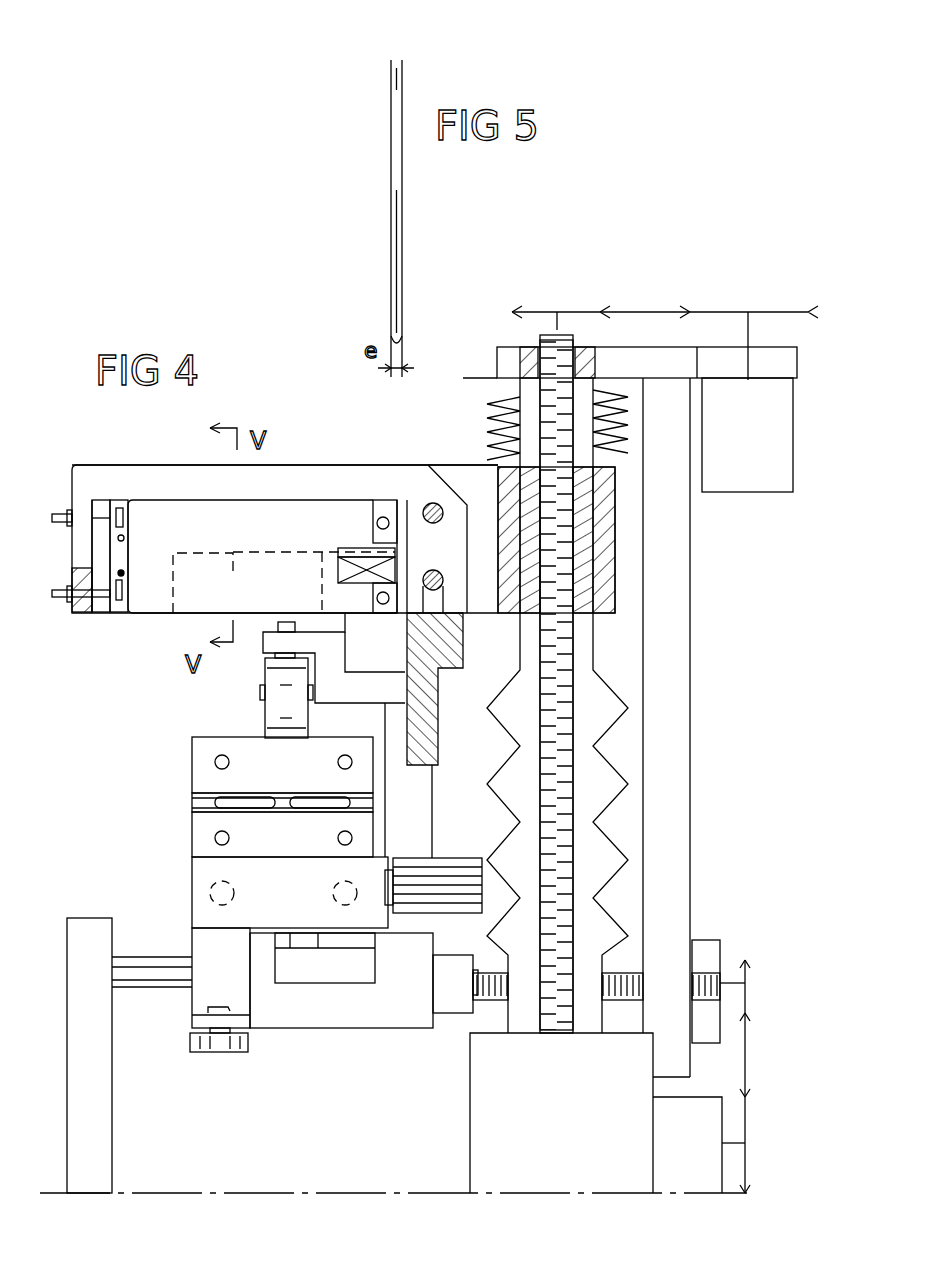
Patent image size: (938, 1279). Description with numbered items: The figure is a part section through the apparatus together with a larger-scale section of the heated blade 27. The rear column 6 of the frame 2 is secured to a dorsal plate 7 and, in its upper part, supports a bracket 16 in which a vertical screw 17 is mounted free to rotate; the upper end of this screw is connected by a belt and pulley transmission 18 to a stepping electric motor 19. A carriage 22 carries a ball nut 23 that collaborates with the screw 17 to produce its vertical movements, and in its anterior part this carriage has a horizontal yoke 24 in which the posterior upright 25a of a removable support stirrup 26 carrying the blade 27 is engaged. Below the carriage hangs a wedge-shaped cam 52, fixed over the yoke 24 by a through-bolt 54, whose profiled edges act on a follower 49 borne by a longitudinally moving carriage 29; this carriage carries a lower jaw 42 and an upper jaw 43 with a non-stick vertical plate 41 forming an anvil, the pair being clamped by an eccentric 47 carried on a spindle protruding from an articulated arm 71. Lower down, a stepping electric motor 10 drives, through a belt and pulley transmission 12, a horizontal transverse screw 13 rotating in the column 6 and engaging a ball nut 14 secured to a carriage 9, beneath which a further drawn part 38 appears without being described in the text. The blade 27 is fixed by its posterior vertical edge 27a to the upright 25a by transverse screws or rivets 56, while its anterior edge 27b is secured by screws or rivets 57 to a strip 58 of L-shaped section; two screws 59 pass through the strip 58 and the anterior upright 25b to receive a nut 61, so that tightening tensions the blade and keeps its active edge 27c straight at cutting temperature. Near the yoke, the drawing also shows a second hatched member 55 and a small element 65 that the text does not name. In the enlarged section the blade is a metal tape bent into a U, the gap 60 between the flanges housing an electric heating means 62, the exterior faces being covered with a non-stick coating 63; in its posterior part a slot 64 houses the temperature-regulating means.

In FIG. 4, the frame 2 is at (337, 712).
In FIG. 4, the rear column 6 is at (667, 652).
In FIG. 4, the dorsal plate 7 is at (713, 962).
In FIG. 4, the carriage 9 is at (348, 1000).
In FIG. 4, the stepping electric motor 10 is at (688, 1170).
In FIG. 4, the belt and pulley transmission 12 is at (754, 1072).
In FIG. 4, the horizontal transverse screw 13 is at (697, 975).
In FIG. 4, the ball nut 14 is at (455, 990).
In FIG. 4, the bracket 16 is at (509, 353).
In FIG. 4, the vertical screw 17 is at (560, 410).
In FIG. 4, the belt and pulley transmission 18 is at (668, 298).
In FIG. 4, the stepping electric motor 19 is at (758, 470).
In FIG. 4, the carriage 22 is at (602, 518).
In FIG. 4, the ball nut 23 is at (577, 560).
In FIG. 4, the horizontal yoke 24 is at (468, 483).
In FIG. 4, the posterior upright 25a is at (457, 574).
In FIG. 4, the anterior upright 25b is at (80, 552).
In FIG. 4, the removable support stirrup 26 is at (292, 466).
In FIG. 4, the heated blade 27 is at (157, 616).
In FIG. 4, the posterior vertical edge 27a is at (383, 508).
In FIG. 4, the anterior edge 27b is at (133, 515).
In FIG. 4, the active edge 27c is at (195, 618).
In FIG. 4, the carriage 29 is at (190, 882).
In FIG. 4, the knob 38 is at (203, 1042).
In FIG. 4, the vertical plate 41 is at (195, 775).
In FIG. 4, the lower jaw 42 is at (186, 833).
In FIG. 4, the upper jaw 43 is at (246, 787).
In FIG. 4, the eccentric 47 is at (270, 705).
In FIG. 4, the follower 49 is at (458, 875).
In FIG. 4, the wedge-shaped cam 52 is at (442, 713).
In FIG. 4, the through-bolt 54 is at (444, 575).
In FIG. 4, the roller 55 is at (444, 513).
In FIG. 4, the transverse screws or rivets 56 is at (387, 604).
In FIG. 4, the screws or rivets 57 is at (125, 574).
In FIG. 4, the strip 58 is at (118, 555).
In FIG. 4, the screws 59 is at (101, 500).
In FIG. 5, the gap 60 is at (390, 126).
In FIG. 4, the nut 61 is at (68, 602).
In FIG. 5, the heating means 62 is at (398, 243).
In FIG. 4, the heating means 62 is at (238, 543).
In FIG. 5, the non-stick coating 63 is at (391, 173).
In FIG. 4, the slot 64 is at (348, 548).
In FIG. 4, the coil 65 is at (364, 583).
In FIG. 4, the arm 71 is at (334, 735).